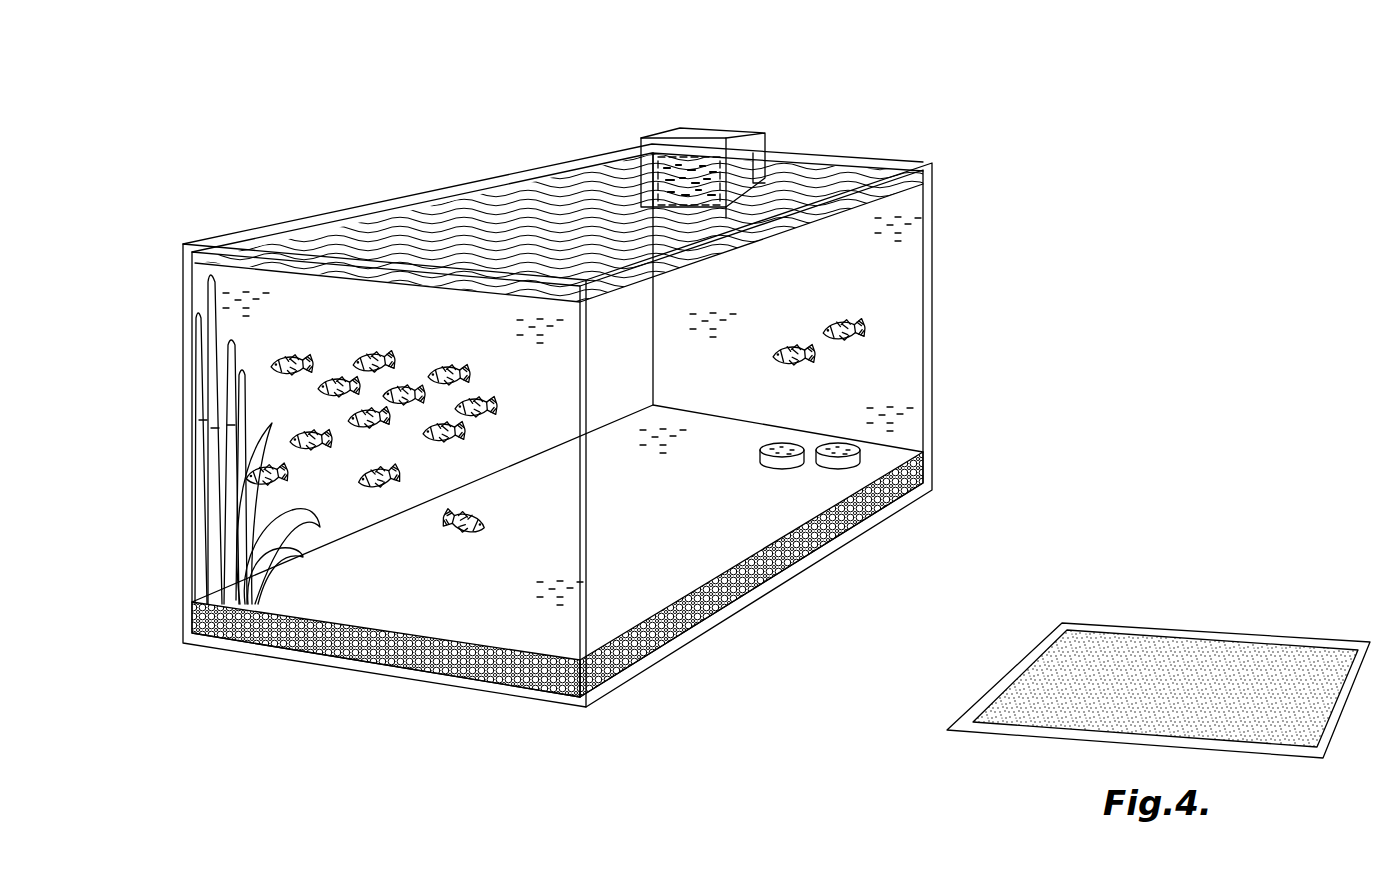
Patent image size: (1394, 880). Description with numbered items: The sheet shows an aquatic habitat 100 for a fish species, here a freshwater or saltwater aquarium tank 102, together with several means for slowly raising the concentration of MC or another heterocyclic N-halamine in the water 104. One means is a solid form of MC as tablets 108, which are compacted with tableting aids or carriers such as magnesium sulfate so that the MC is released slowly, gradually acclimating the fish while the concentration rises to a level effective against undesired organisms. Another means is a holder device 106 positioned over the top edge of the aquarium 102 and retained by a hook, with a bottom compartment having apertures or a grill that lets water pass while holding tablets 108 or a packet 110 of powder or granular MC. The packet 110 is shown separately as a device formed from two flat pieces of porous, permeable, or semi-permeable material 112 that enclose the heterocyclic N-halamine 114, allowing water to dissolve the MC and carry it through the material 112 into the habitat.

In FIG. 3, the habitat 100 is at (846, 120).
In FIG. 3, the aquarium tank 102 is at (932, 323).
In FIG. 3, the aquatic habitat water 104 is at (875, 272).
In FIG. 3, the holder device 106 is at (722, 128).
In FIG. 3, the tablets 108 is at (842, 447).
In FIG. 3, the packet 110 is at (660, 152).
In FIG. 4, the packet 110 is at (1114, 608).
In FIG. 4, the material 112 is at (1027, 652).
In FIG. 4, the heterocyclic N-halamine 114 is at (1185, 662).